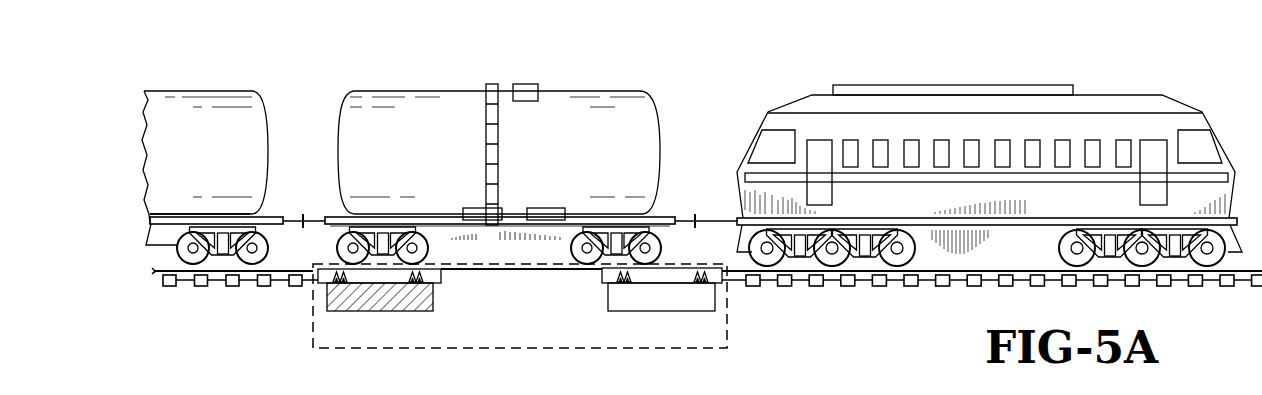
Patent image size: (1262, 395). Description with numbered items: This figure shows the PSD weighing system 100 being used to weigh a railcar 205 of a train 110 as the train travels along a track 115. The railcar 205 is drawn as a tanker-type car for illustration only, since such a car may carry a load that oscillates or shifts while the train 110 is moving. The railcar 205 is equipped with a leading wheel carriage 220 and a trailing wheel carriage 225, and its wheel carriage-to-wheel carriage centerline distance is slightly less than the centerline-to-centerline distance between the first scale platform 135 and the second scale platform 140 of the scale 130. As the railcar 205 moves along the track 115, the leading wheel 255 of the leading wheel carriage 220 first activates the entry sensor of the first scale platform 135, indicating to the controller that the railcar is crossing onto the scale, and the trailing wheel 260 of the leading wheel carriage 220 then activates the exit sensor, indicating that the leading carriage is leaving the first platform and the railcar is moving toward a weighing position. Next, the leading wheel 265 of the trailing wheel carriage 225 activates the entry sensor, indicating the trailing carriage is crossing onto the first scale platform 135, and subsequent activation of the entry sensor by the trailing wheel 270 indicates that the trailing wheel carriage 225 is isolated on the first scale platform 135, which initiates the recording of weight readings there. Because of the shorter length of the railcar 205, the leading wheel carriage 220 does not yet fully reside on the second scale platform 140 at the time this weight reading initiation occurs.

The PSD weighing system 100 is at (707, 324).
The train 110 is at (977, 58).
The track 115 is at (223, 272).
The scale 130 is at (520, 329).
The first scale platform 135 is at (347, 303).
The second scale platform 140 is at (690, 298).
The railcar 205 is at (492, 181).
The leading wheel carriage 220 is at (663, 331).
The trailing wheel carriage 225 is at (379, 332).
The leading wheel 255 is at (668, 220).
The trailing wheel 260 is at (572, 252).
The leading wheel 265 is at (429, 248).
The trailing wheel 270 is at (337, 243).